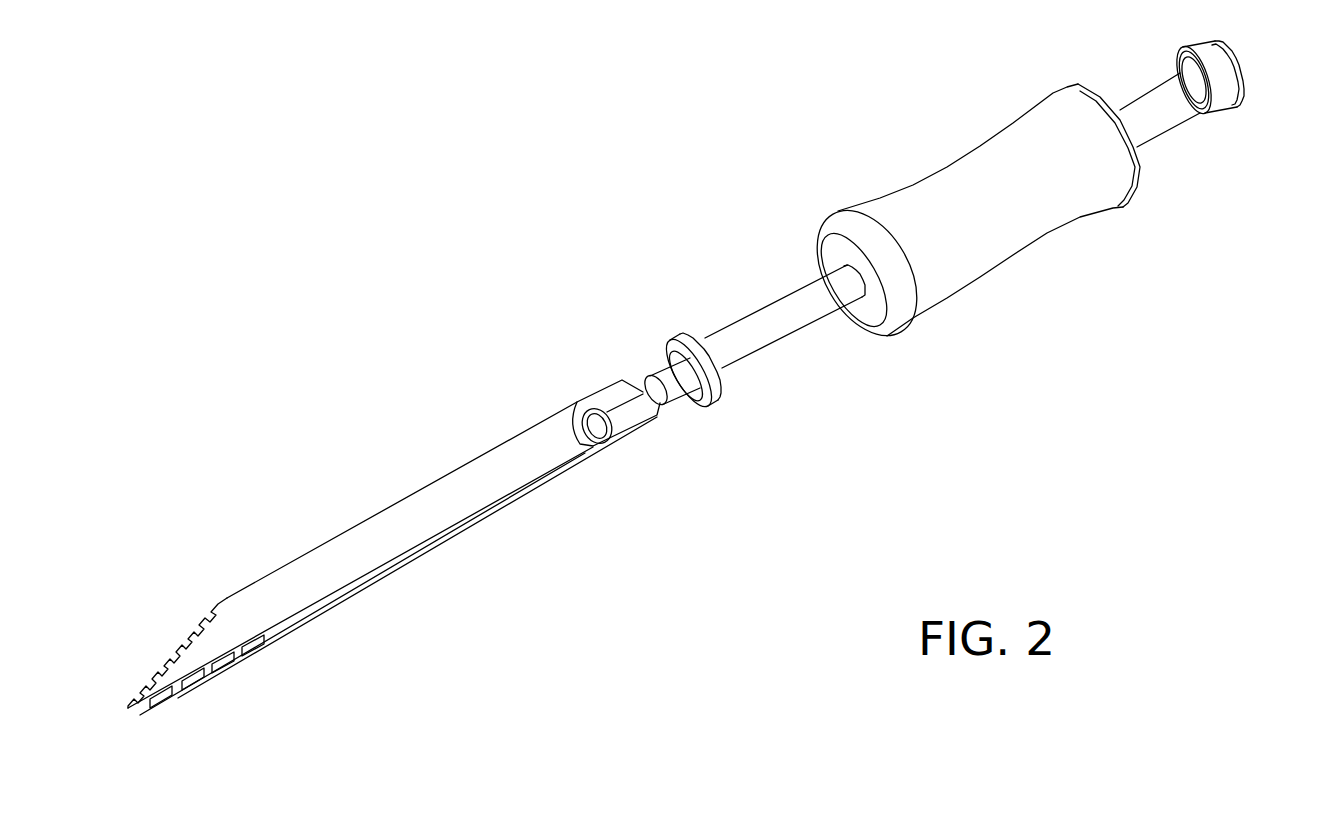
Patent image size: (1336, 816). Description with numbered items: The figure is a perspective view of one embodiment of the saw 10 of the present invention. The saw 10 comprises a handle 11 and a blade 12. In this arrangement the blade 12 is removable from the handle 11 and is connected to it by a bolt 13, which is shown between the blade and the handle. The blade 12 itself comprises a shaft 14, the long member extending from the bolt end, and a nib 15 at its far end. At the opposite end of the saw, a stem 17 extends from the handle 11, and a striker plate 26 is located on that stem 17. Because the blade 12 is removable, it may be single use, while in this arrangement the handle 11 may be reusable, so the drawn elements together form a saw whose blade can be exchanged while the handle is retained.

The saw 10 is at (577, 208).
The handle 11 is at (1022, 236).
The blade 12 is at (470, 548).
The bolt 13 is at (652, 348).
The shaft 14 is at (447, 473).
The nib 15 is at (150, 612).
The stem 17 is at (1134, 78).
The striker plate 26 is at (1267, 85).